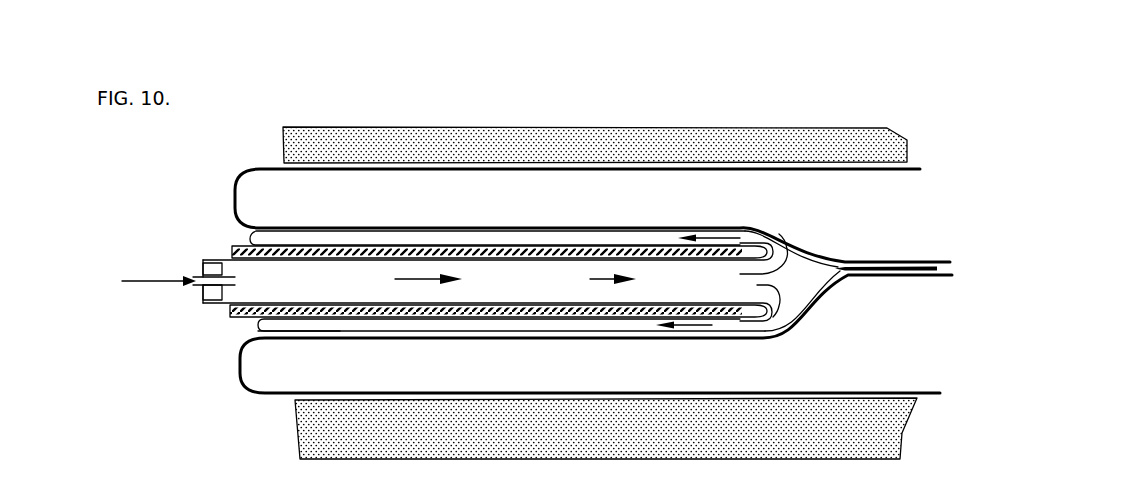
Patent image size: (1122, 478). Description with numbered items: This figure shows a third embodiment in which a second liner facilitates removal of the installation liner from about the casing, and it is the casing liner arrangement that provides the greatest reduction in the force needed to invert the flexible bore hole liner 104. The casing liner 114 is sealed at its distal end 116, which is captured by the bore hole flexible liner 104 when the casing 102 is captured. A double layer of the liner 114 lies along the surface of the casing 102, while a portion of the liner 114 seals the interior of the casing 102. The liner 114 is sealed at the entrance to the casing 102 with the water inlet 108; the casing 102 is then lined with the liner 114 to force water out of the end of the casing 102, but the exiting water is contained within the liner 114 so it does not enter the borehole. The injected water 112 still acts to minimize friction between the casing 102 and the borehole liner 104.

The casing 102 is at (231, 252).
The flexible bore hole liner 104 is at (234, 192).
The water inlet 108 is at (199, 284).
The injected water 112 is at (140, 281).
The casing liner 114 is at (258, 324).
The distal end 116 is at (897, 266).